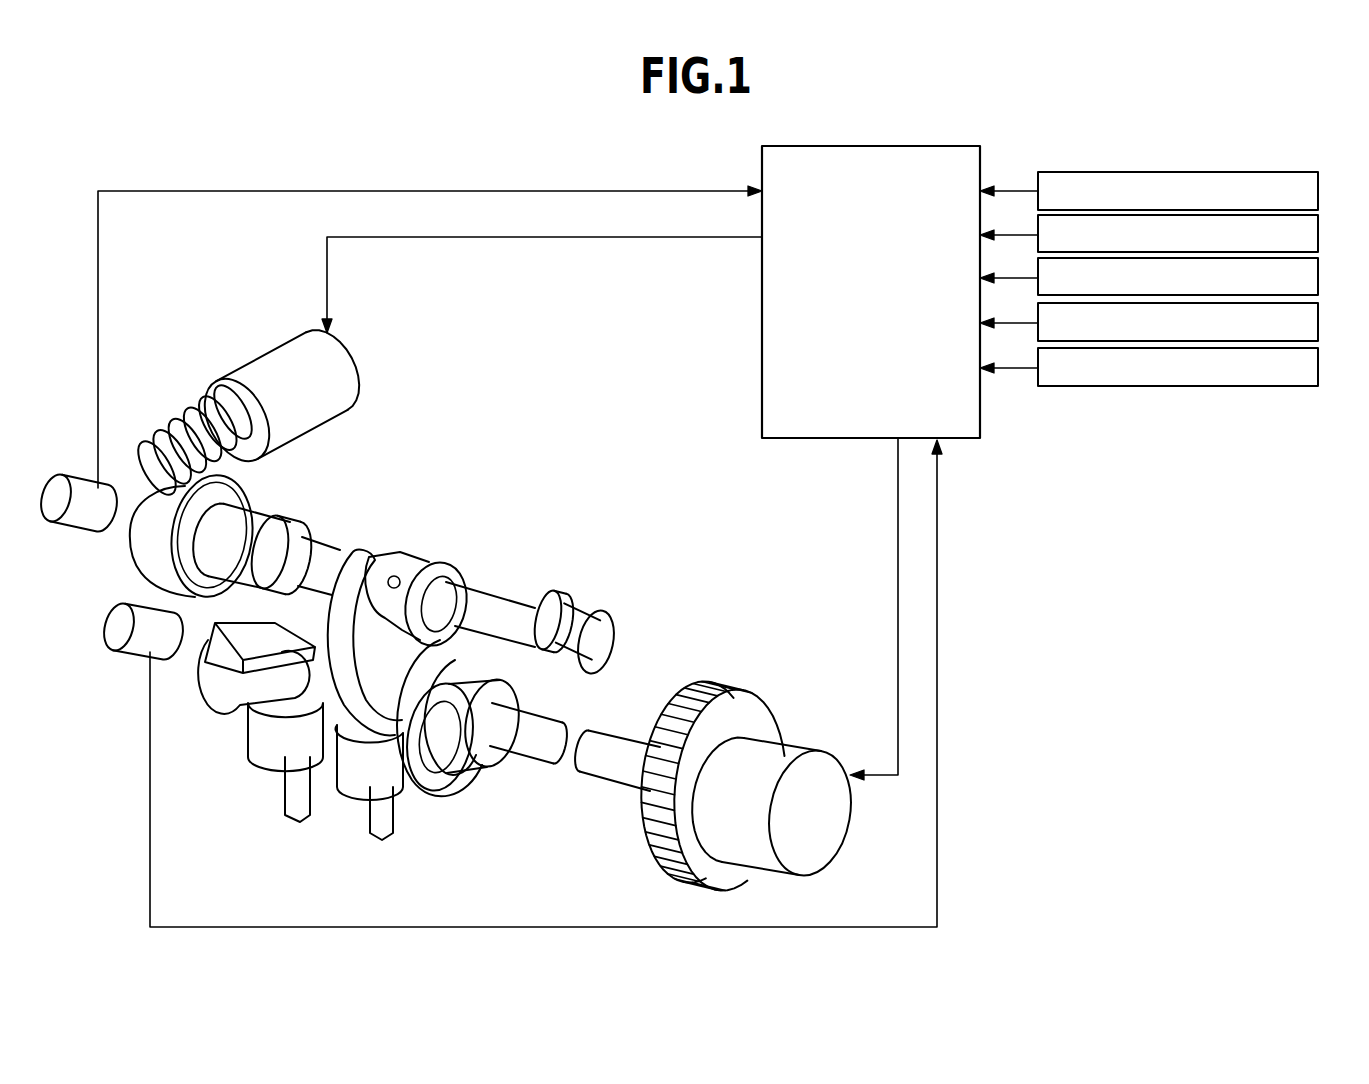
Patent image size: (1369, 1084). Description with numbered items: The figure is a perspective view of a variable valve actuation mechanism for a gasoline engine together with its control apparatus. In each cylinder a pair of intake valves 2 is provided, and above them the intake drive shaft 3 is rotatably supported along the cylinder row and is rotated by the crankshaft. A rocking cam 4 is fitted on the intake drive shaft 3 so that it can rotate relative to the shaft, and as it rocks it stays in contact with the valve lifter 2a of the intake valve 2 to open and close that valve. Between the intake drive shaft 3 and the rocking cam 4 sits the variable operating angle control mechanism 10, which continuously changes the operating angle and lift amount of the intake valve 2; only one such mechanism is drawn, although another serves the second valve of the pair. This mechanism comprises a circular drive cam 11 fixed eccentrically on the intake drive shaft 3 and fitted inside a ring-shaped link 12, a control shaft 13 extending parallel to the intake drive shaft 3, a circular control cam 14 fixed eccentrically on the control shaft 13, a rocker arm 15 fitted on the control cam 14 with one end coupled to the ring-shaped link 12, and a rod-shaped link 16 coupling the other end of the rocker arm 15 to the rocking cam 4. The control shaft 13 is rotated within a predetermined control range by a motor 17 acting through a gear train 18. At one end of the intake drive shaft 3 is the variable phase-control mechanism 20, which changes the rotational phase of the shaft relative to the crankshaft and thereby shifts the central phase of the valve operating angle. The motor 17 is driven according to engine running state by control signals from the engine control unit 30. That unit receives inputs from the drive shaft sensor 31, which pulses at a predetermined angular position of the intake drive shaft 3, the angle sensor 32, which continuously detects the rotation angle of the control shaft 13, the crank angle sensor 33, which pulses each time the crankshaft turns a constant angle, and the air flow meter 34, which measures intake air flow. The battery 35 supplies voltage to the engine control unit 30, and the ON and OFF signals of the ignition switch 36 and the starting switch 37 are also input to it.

The intake valve 2 is at (288, 792).
The valve lifter 2a is at (255, 748).
The intake drive shaft 3 is at (523, 738).
The rocking cam 4 is at (223, 683).
The variable operating angle control mechanism 10 is at (476, 541).
The drive cam 11 is at (430, 765).
The ring-shaped link 12 is at (400, 763).
The control shaft 13 is at (550, 594).
The control cam 14 is at (527, 610).
The rocker arm 15 is at (413, 570).
The rod-shaped link 16 is at (342, 712).
The motor 17 is at (305, 413).
The gear train 18 is at (140, 512).
The variable phase-control mechanism 20 is at (801, 736).
The engine control unit 30 is at (762, 307).
The drive shaft sensor 31 is at (128, 636).
The angle sensor 32 is at (78, 516).
The crank angle sensor 33 is at (1318, 187).
The air flow meter 34 is at (1318, 232).
The battery 35 is at (1318, 276).
The ignition switch 36 is at (1318, 320).
The starting switch 37 is at (1318, 365).